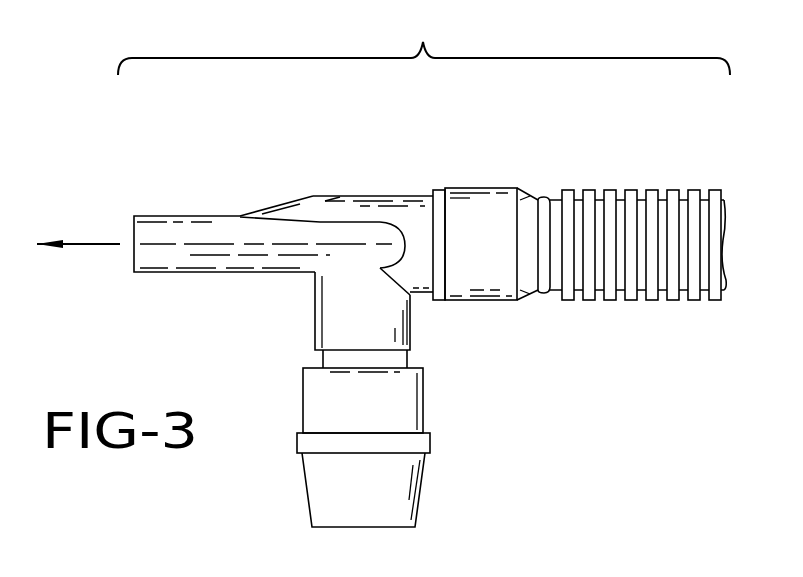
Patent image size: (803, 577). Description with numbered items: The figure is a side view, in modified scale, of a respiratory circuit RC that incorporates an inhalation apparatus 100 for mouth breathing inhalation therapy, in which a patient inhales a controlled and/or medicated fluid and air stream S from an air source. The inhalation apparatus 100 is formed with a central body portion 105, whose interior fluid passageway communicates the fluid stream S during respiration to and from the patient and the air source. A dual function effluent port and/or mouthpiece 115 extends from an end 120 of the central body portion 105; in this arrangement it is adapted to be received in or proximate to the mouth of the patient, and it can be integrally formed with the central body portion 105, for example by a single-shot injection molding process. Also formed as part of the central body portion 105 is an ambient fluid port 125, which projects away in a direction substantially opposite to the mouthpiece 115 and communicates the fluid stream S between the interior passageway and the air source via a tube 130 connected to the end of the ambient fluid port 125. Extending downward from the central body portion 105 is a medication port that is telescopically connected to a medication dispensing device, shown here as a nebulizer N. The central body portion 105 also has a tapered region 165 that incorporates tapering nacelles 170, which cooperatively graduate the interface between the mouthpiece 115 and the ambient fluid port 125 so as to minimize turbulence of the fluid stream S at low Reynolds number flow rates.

The inhalation apparatus 100 is at (367, 216).
The central body portion 105 is at (387, 197).
The dual function effluent port and/or mouthpiece 115 is at (145, 216).
The end 120 is at (190, 216).
The ambient fluid port 125 is at (422, 197).
The tube 130 is at (588, 190).
The tapered region 165 is at (280, 205).
The tapering nacelles 170 is at (370, 252).
The nebulizer N is at (432, 438).
The fluid and air stream S is at (92, 243).
The respiratory circuit RC is at (424, 45).